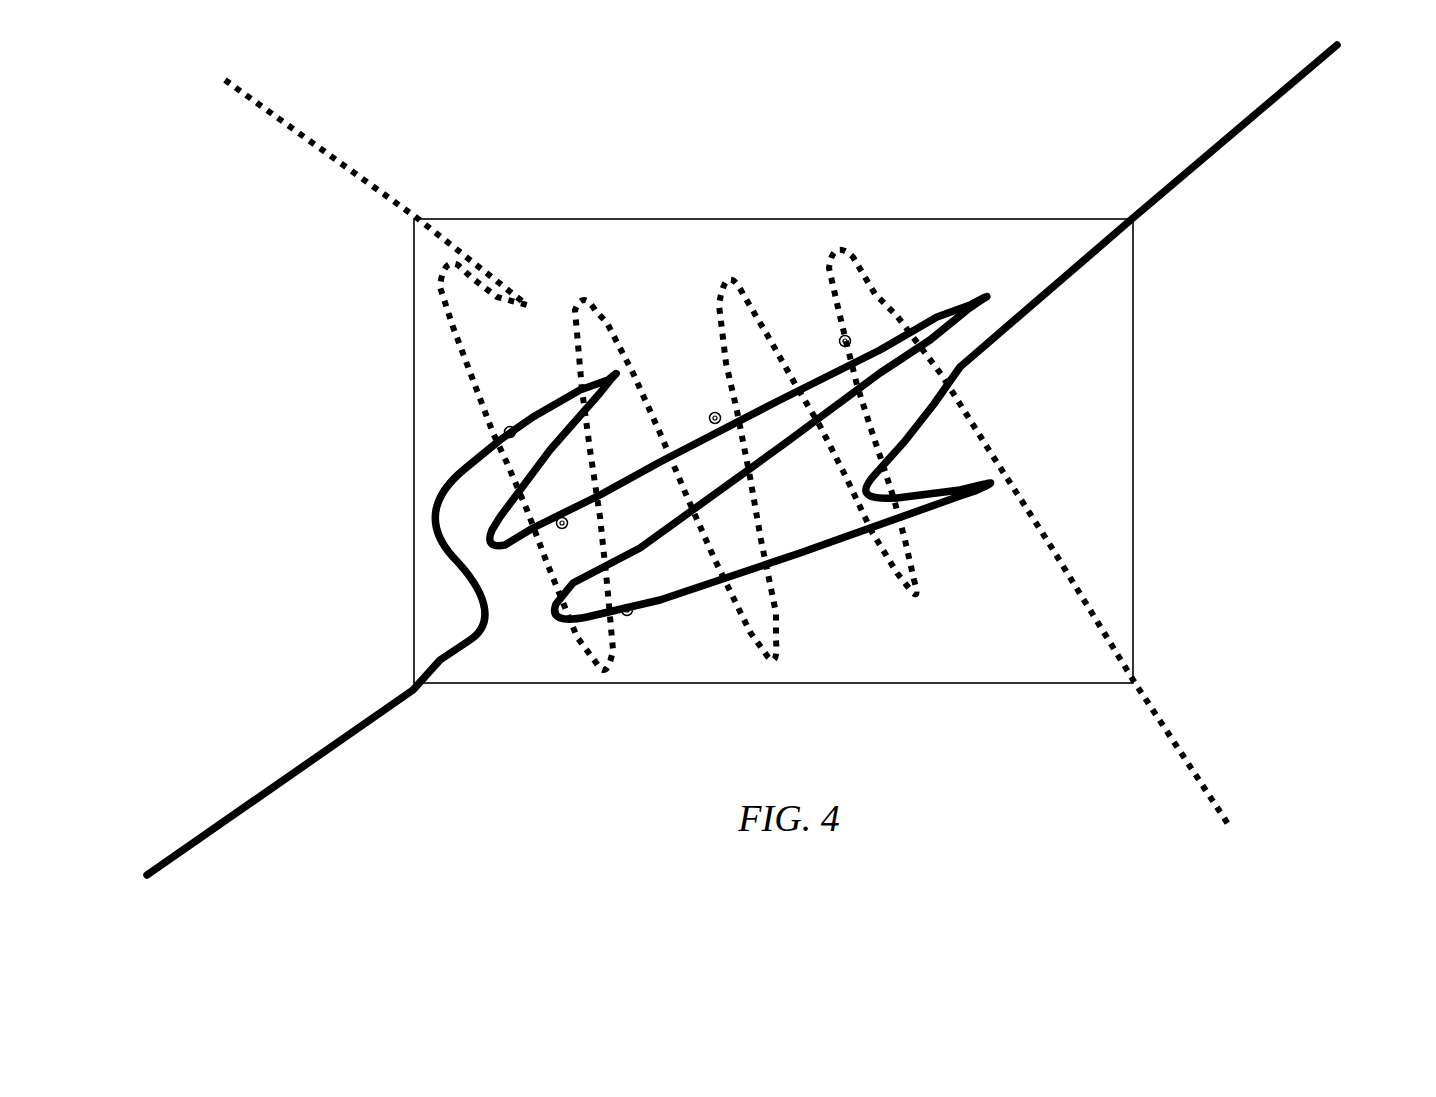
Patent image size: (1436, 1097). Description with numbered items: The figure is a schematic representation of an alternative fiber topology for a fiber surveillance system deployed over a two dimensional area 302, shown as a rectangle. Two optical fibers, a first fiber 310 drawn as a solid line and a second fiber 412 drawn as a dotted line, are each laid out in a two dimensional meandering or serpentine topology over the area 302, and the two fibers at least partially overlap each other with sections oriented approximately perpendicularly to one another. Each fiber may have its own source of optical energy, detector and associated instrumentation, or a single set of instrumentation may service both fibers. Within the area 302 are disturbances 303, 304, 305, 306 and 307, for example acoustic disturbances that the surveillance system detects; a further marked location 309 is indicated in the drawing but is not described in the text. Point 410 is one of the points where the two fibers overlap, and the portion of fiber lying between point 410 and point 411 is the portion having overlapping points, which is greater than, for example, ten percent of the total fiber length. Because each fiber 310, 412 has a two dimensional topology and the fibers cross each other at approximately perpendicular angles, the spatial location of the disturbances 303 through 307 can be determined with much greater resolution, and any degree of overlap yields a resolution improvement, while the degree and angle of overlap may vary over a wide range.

The two dimensional area 302 is at (1133, 453).
The disturbance 303 is at (818, 331).
The disturbance 304 is at (696, 402).
The disturbance 305 is at (562, 539).
The disturbance 306 is at (498, 417).
The disturbance 307 is at (638, 629).
The anchor point 309 is at (780, 567).
The fiber 310 is at (1258, 138).
The overlap point 410 is at (953, 383).
The overlap point 411 is at (480, 440).
The fiber 412 is at (1236, 827).